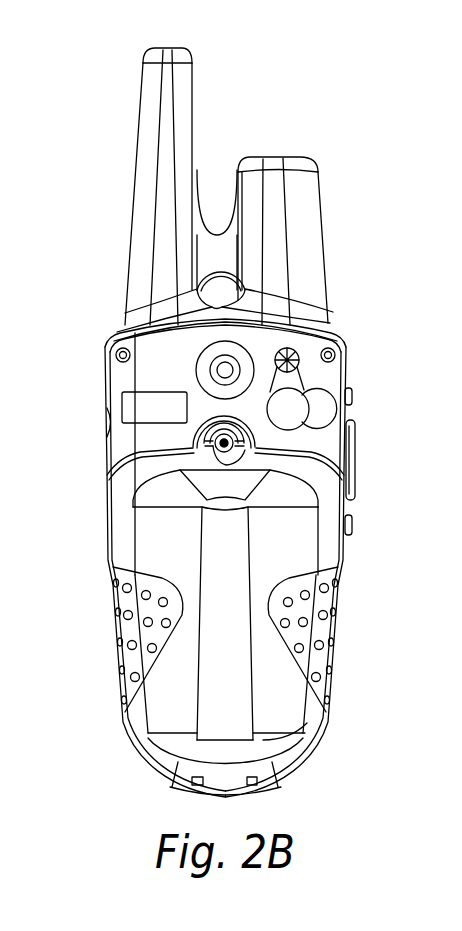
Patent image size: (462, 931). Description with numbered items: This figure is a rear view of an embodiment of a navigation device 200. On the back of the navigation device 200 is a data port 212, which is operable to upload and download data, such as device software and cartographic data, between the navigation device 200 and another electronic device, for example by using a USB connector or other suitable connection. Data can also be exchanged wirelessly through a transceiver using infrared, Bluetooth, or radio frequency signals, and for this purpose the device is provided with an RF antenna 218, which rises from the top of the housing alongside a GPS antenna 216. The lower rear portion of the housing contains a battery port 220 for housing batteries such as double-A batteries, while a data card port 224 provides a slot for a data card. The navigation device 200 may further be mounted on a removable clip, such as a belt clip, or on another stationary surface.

The navigation device 200 is at (365, 92).
The data port 212 is at (293, 408).
The GPS antenna 216 is at (322, 228).
The RF antenna 218 is at (139, 141).
The battery port 220 is at (278, 530).
The data card port 224 is at (128, 402).